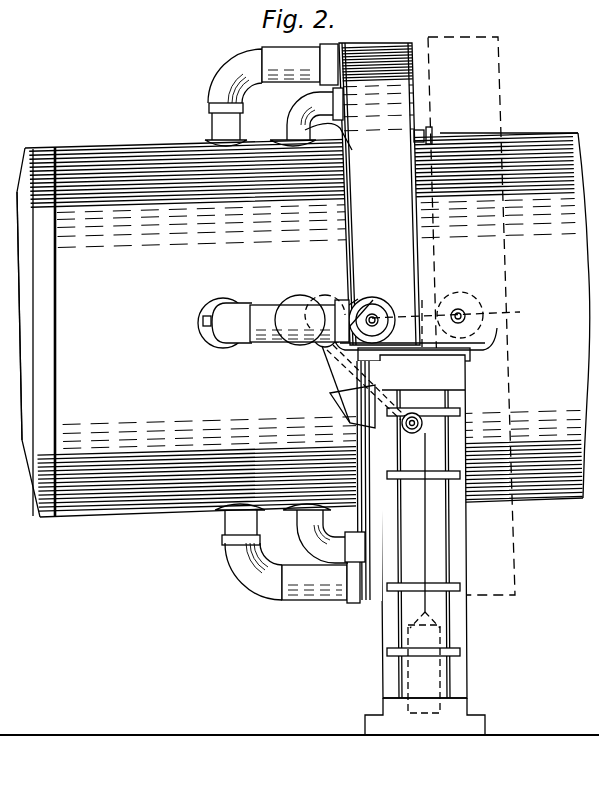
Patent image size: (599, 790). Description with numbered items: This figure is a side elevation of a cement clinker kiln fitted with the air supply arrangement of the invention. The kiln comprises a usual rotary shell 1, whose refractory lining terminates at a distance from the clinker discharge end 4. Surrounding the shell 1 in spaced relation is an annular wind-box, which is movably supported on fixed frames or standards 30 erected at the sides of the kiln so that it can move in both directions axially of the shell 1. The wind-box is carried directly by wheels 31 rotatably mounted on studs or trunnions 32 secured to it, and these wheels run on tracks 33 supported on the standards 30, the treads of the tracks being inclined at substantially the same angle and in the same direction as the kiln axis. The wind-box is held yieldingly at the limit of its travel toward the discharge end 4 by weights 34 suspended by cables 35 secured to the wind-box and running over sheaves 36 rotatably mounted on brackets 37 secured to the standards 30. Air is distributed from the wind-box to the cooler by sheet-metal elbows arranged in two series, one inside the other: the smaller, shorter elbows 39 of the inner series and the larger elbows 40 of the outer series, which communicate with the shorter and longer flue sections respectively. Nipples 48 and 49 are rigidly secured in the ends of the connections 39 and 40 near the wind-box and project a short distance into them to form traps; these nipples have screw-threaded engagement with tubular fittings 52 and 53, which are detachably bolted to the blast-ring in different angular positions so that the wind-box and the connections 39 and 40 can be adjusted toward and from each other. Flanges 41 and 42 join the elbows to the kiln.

The rotary shell 1 is at (135, 160).
The clinker discharge end 4 is at (21, 392).
The fixed frames or standards 30 is at (374, 628).
The wheels 31 is at (384, 298).
The studs or trunnions 32 is at (379, 313).
The tracks 33 is at (410, 350).
The weights 34 is at (404, 687).
The cables 35 is at (425, 612).
The sheaves 36 is at (325, 350).
The brackets 37 is at (348, 399).
The elbows of the inner series 39 is at (300, 116).
The elbows of the outer series 40 is at (234, 60).
The flange 41 is at (285, 140).
The flange 42 is at (210, 140).
The nipple 48 is at (352, 150).
The nipple 49 is at (290, 628).
The tubular fitting 52 is at (342, 103).
The tubular fitting 53 is at (328, 48).